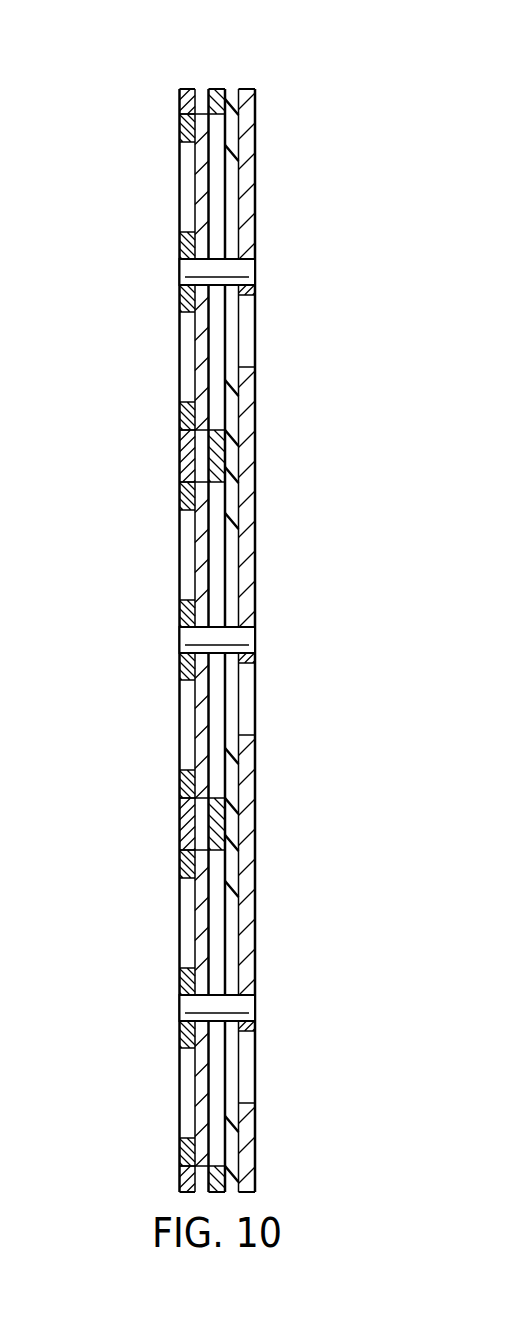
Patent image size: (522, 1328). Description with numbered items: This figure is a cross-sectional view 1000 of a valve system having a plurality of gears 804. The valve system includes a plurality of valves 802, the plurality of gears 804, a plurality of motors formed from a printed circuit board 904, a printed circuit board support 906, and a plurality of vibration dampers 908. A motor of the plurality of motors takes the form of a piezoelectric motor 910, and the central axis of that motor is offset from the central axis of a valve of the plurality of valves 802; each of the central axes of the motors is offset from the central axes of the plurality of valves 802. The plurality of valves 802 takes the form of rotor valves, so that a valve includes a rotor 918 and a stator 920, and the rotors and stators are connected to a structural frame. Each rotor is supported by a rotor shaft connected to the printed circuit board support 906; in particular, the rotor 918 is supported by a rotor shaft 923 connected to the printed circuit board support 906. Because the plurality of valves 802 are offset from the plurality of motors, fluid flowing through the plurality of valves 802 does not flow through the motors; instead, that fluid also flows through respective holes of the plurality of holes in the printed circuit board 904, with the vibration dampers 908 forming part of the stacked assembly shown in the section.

The view 1000 is at (350, 63).
The piezoelectric motor 910 is at (110, 67).
The plurality of valves 802 is at (69, 153).
The plurality of gears 804 is at (201, 83).
The rotor shaft 923 is at (247, 270).
The stator 920 is at (180, 1038).
The printed circuit board 904 is at (218, 825).
The printed circuit board support 906 is at (247, 118).
The plurality of vibration dampers 908 is at (232, 415).
The rotor 918 is at (202, 538).